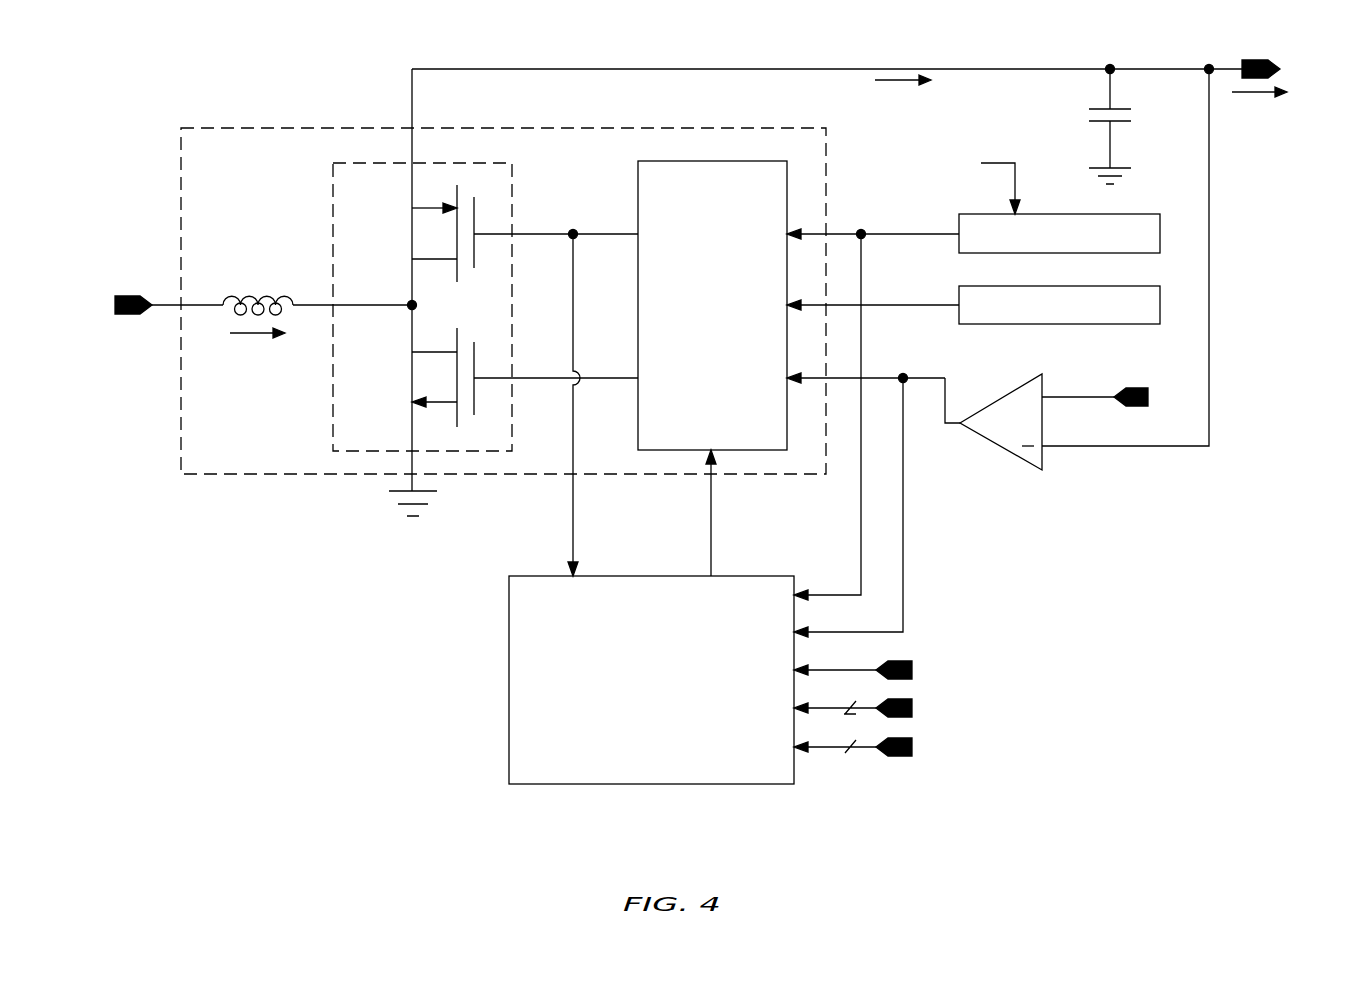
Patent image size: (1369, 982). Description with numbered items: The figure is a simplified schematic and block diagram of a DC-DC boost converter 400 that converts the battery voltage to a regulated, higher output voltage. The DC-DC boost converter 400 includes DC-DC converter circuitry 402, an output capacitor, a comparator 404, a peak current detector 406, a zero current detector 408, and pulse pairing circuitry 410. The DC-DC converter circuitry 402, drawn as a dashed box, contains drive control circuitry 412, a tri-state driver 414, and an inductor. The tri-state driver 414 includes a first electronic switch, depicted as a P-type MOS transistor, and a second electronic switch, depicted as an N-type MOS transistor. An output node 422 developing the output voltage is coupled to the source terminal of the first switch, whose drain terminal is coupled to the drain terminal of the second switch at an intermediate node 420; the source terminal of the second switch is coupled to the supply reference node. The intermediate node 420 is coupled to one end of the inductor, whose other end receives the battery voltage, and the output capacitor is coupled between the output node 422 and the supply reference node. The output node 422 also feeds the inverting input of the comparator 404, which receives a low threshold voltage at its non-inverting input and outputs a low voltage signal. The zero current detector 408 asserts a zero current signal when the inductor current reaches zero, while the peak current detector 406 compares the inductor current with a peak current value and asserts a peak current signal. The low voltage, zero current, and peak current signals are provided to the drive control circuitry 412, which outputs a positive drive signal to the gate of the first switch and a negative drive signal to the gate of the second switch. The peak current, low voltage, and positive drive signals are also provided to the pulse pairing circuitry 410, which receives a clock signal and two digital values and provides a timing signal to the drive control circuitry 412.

The DC-DC boost converter 400 is at (384, 674).
The DC-DC converter circuitry 402 is at (250, 462).
The comparator 404 is at (1025, 433).
The peak current detector 406 is at (1049, 213).
The zero current detector 408 is at (1054, 324).
The pulse pairing circuitry 410 is at (670, 708).
The drive control circuitry 412 is at (731, 346).
The tri-state driver 414 is at (396, 435).
The intermediate node 420 is at (417, 303).
The output node 422 is at (1212, 63).